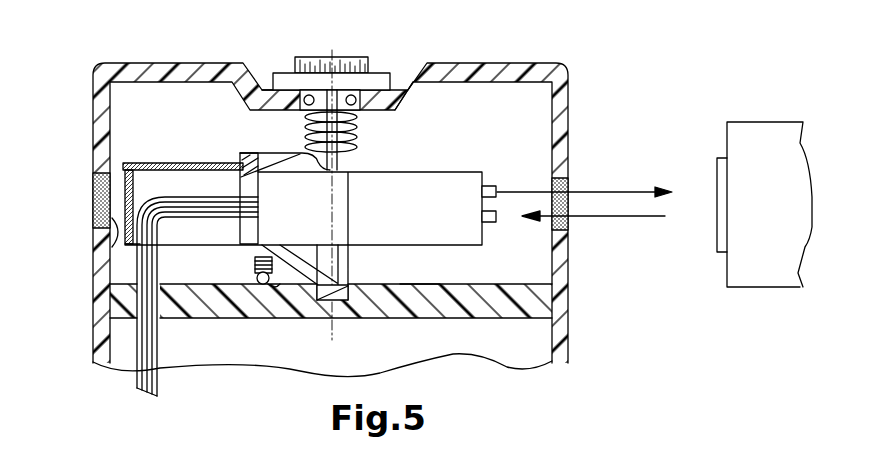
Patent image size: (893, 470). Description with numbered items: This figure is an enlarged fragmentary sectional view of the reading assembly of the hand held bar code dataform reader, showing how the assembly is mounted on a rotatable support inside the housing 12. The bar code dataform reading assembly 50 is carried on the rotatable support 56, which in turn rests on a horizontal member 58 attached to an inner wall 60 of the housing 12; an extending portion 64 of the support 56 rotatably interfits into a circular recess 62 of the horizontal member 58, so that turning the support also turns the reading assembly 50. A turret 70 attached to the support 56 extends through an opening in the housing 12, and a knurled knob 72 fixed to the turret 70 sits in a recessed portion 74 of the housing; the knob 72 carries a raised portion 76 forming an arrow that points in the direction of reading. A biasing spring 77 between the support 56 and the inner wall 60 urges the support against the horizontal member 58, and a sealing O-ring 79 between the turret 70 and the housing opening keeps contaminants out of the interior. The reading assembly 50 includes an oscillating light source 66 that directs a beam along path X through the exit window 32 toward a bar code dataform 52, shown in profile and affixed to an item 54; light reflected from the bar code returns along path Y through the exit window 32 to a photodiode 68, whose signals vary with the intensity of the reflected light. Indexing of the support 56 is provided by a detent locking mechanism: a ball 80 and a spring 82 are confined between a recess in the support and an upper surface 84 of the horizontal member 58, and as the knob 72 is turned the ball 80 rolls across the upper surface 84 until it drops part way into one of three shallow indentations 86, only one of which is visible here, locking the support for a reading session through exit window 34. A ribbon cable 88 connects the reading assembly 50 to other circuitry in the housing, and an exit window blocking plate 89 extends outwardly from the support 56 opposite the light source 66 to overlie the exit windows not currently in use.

The housing 12 is at (560, 292).
The exit window 32 is at (94, 188).
The exit window 34 is at (568, 182).
The bar code dataform reading assembly 50 is at (303, 208).
The bar code dataform 52 is at (717, 228).
The item 54 is at (769, 204).
The rotatable support 56 is at (259, 156).
The horizontal member 58 is at (433, 317).
The inner wall 60 is at (112, 218).
The circular recess 62 is at (337, 309).
The extending portion 64 is at (336, 283).
The light source 66 is at (493, 186).
The photodiode 68 is at (488, 222).
The turret 70 is at (325, 89).
The knurled knob 72 is at (370, 81).
The recessed portion 74 is at (266, 90).
The raised portion 76 is at (321, 56).
The biasing spring 77 is at (359, 130).
The sealing O-ring 79 is at (366, 102).
The ball 80 is at (263, 285).
The spring 82 is at (252, 275).
The upper surface 84 is at (422, 283).
The indentation 86 is at (271, 288).
The ribbon cable 88 is at (170, 217).
The exit window blocking plate 89 is at (121, 168).